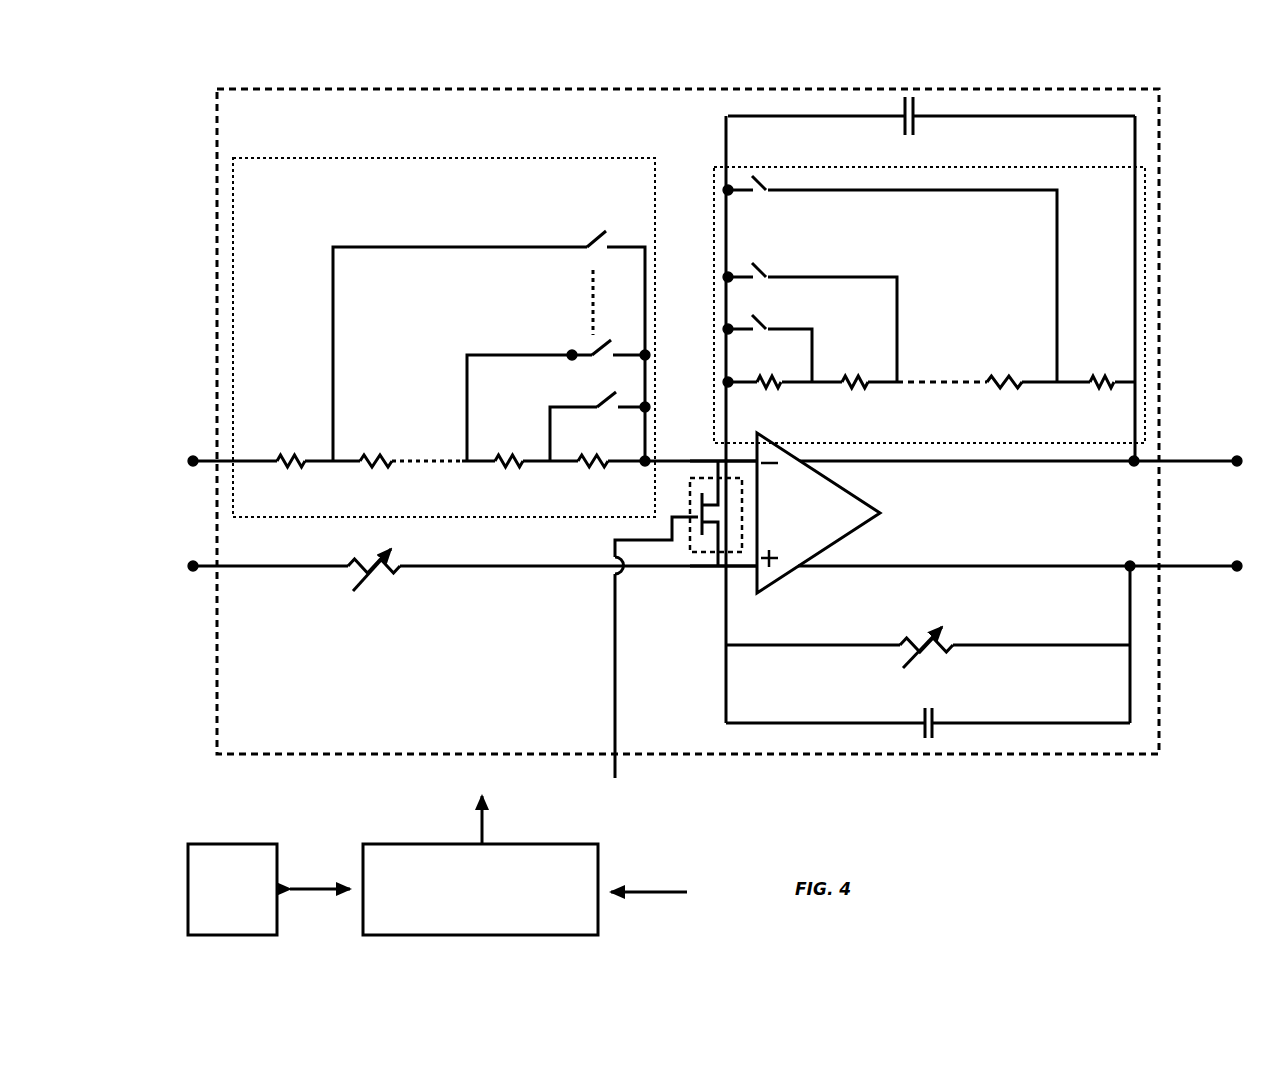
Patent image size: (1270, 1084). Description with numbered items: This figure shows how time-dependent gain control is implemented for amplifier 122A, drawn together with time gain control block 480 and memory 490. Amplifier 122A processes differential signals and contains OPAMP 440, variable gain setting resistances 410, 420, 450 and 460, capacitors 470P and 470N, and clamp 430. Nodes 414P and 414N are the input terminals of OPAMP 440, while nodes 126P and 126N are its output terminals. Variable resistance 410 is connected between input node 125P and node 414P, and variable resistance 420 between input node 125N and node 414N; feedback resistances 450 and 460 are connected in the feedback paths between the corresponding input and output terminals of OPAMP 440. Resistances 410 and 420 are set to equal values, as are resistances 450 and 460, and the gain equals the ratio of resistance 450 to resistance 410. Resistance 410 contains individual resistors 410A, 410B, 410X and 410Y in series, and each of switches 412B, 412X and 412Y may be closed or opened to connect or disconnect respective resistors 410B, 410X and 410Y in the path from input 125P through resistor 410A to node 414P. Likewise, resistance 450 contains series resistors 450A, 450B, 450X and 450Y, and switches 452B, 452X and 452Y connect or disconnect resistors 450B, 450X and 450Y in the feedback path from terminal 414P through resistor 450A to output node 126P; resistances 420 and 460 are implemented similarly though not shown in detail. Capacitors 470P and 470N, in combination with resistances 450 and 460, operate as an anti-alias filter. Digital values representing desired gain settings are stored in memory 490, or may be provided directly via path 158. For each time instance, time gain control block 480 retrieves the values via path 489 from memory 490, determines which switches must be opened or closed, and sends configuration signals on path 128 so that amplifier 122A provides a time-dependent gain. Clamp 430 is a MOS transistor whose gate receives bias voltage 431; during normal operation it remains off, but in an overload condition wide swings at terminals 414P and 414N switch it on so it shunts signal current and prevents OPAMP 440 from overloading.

The amplifier 122A is at (560, 84).
The variable gain setting resistance 410 is at (465, 154).
The feedback resistance 450 is at (777, 165).
The capacitor 470P is at (918, 119).
The capacitor 470N is at (922, 720).
The switch 452B is at (766, 193).
The switch 452X is at (766, 280).
The switch 452Y is at (766, 332).
The switch 412B is at (592, 253).
The switch 412X is at (600, 362).
The switch 412Y is at (604, 414).
The resistor 450Y is at (772, 389).
The resistor 450X is at (882, 406).
The resistor 450B is at (1005, 389).
The resistor 450A is at (1129, 404).
The resistor 410A is at (290, 468).
The resistor 410B is at (375, 468).
The resistor 410X is at (508, 468).
The resistor 410Y is at (592, 468).
The input node 125P is at (192, 455).
The input node 125N is at (192, 560).
The output terminal 126P is at (1202, 456).
The output terminal 126N is at (1202, 560).
The input terminal of OPAMP 414P is at (692, 456).
The input terminal of OPAMP 414N is at (690, 572).
The clamp 430 is at (690, 496).
The bias voltage 431 is at (617, 770).
The OPAMP 440 is at (815, 525).
The variable gain setting resistance 420 is at (365, 585).
The feedback resistance 460 is at (896, 630).
The path 128 is at (485, 813).
The path 489 is at (335, 893).
The memory 490 is at (214, 913).
The time gain control block 480 is at (463, 921).
The path 158 is at (650, 895).